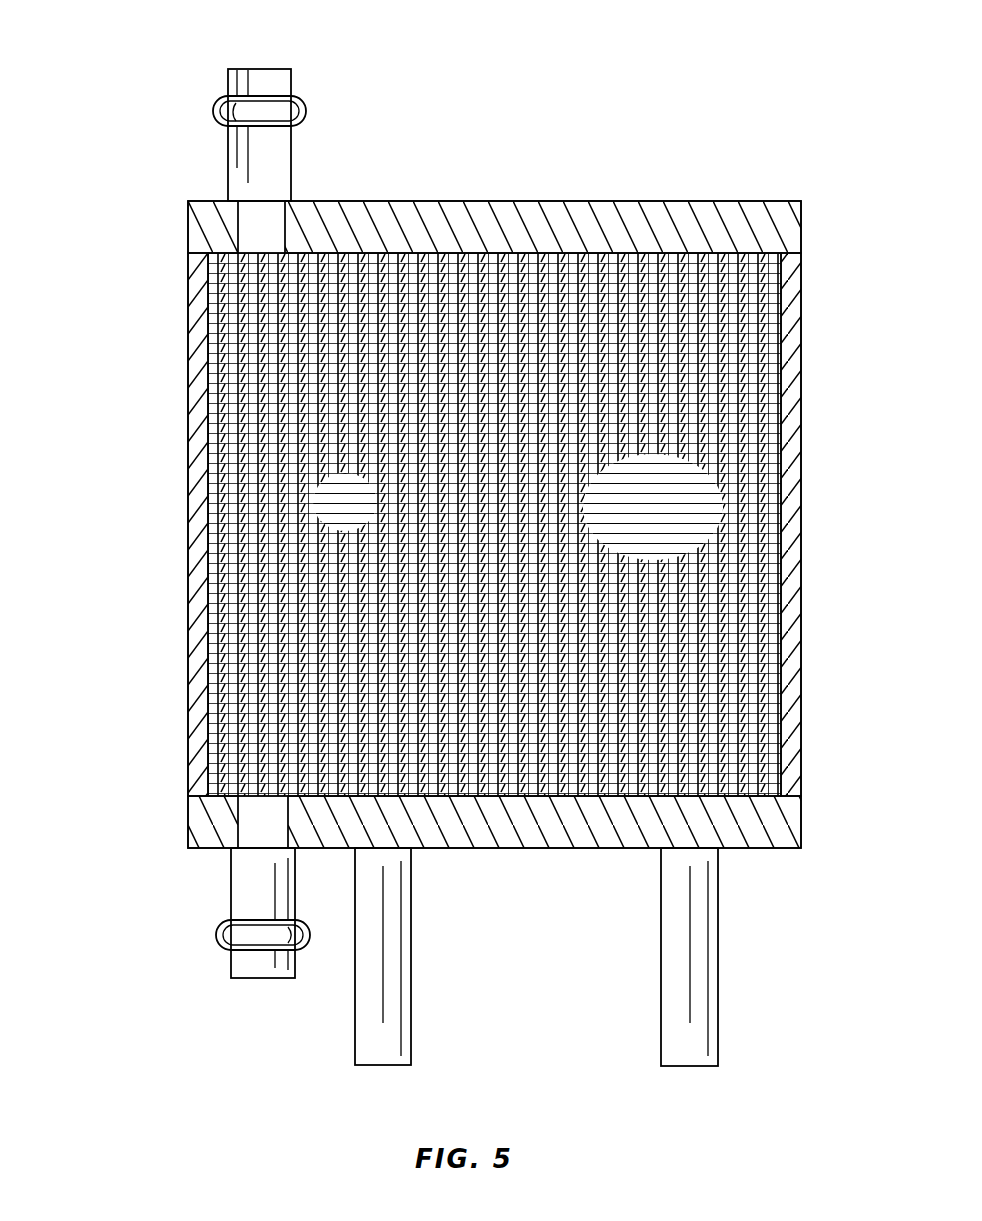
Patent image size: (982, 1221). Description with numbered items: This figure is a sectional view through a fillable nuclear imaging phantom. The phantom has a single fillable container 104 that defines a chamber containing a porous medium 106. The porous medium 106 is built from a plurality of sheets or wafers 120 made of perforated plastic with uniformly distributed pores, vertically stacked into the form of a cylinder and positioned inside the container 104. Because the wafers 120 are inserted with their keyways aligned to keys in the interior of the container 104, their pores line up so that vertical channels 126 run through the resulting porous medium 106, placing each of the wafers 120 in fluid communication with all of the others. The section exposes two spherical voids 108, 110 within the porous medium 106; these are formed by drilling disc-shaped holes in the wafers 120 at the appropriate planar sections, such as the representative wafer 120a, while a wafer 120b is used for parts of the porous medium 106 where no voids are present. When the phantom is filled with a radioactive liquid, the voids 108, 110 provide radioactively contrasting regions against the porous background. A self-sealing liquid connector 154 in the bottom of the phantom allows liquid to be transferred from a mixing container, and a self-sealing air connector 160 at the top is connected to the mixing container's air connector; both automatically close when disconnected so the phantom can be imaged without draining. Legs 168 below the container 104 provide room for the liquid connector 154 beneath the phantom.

The fillable container 104 is at (183, 557).
The porous medium 106 is at (198, 310).
The spherical void 108 is at (305, 495).
The spherical void 110 is at (684, 468).
The wafers 120 is at (200, 353).
The wafer 120a is at (773, 495).
The wafer 120b is at (777, 641).
The vertical channels 126 is at (371, 243).
The liquid connector 154 is at (225, 967).
The air connector 160 is at (238, 63).
The legs 168 is at (403, 957).